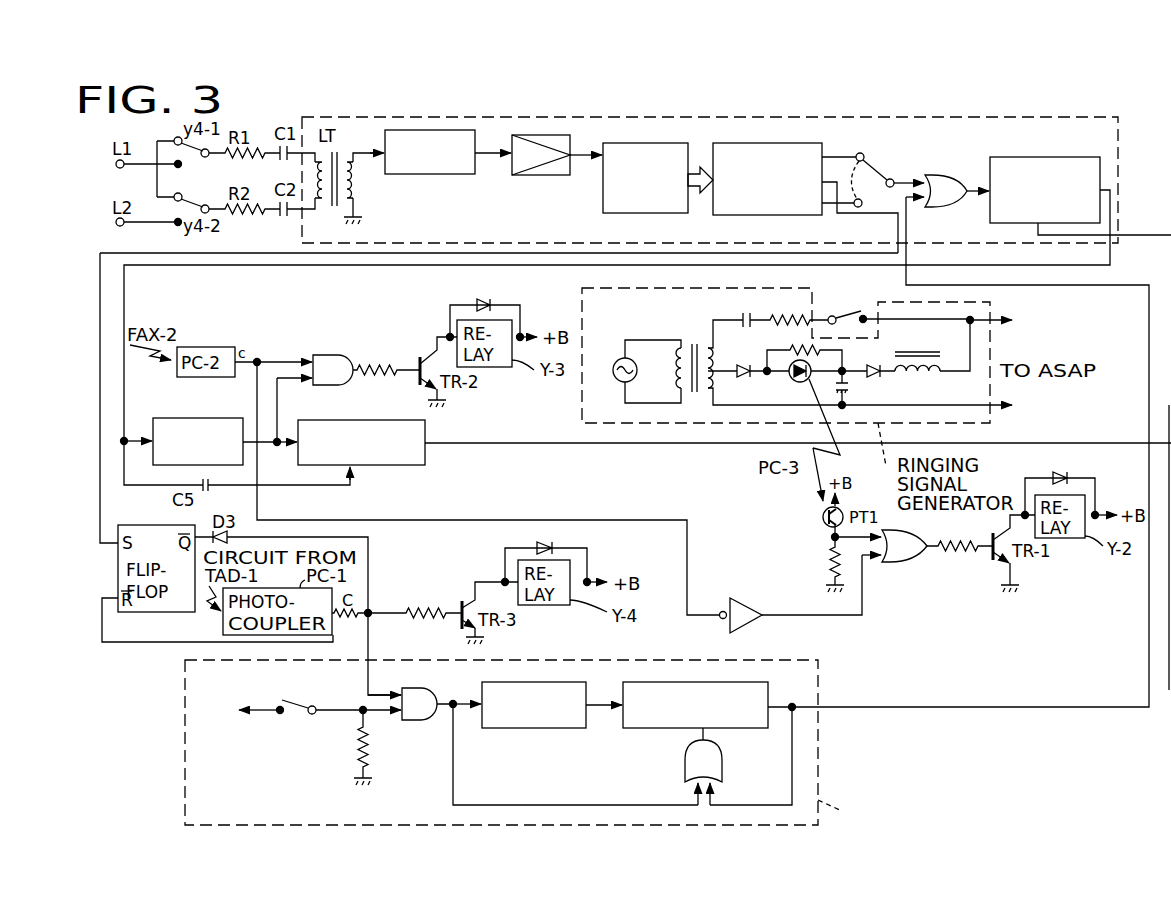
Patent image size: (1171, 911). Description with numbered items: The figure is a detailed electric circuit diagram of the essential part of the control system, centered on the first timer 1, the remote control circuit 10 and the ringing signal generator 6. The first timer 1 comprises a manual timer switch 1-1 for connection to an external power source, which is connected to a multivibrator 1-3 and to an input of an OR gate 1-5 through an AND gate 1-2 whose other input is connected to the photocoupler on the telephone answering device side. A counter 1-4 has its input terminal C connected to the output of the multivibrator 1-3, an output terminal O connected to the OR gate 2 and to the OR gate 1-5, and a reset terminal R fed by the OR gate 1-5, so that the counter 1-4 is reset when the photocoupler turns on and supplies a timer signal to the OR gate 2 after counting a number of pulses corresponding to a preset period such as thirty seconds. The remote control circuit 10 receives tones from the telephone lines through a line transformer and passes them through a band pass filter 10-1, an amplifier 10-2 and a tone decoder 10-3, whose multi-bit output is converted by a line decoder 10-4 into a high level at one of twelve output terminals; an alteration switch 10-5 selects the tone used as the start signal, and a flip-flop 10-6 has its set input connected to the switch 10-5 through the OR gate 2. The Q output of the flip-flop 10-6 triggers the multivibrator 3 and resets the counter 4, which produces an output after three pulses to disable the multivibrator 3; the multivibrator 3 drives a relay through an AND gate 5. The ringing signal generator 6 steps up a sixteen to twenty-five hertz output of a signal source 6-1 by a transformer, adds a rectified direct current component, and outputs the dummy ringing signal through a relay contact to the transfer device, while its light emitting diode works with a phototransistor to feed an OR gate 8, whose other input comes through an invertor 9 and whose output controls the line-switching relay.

The first timer 1 is at (820, 768).
The manual timer switch 1-1 is at (296, 718).
The AND gate 1-2 is at (420, 720).
The multivibrator 1-3 is at (509, 728).
The counter 1-4 is at (645, 728).
The OR gate 1-5 is at (722, 760).
The OR gate 2 is at (944, 175).
The multivibrator 3 is at (206, 418).
The counter 4 is at (425, 460).
The AND gate 5 is at (336, 355).
The ringing signal generator 6 is at (580, 311).
The signal source 6-1 is at (625, 358).
The OR gate 8 is at (906, 562).
The invertor 9 is at (745, 598).
The remote control circuit 10 is at (822, 119).
The band pass filter 10-1 is at (430, 174).
The amplifier 10-2 is at (538, 175).
The tone decoder 10-3 is at (648, 143).
The line decoder 10-4 is at (763, 215).
The alteration switch 10-5 is at (862, 156).
The flip-flop 10-6 is at (1040, 157).